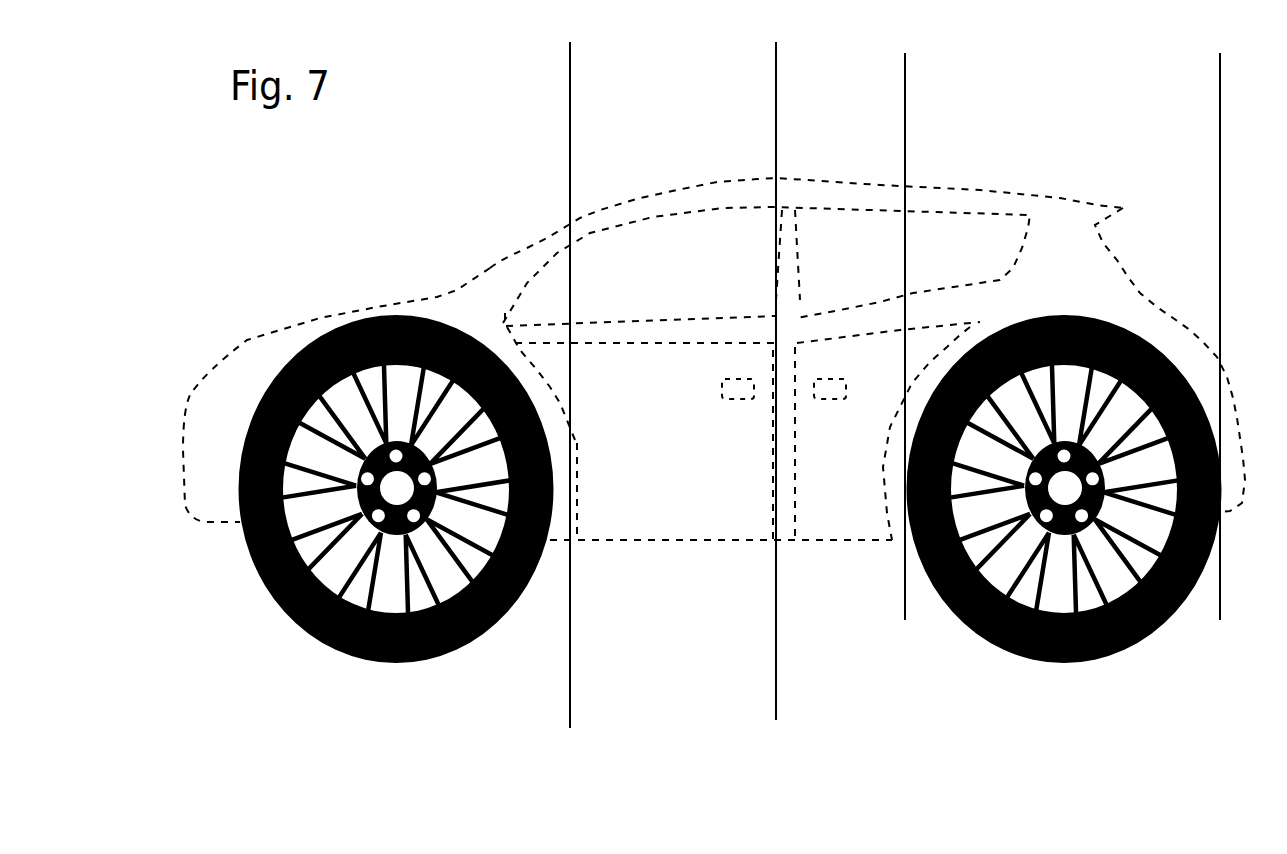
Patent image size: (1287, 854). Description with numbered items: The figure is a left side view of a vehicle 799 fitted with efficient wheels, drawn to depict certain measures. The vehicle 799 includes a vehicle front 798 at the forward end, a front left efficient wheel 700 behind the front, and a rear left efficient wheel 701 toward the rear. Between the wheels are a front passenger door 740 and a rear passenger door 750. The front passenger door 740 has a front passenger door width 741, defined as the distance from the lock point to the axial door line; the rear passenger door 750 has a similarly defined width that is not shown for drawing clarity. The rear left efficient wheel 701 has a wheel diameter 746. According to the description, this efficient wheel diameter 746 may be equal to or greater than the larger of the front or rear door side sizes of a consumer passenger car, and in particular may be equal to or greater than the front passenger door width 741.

The front left efficient wheel 700 is at (300, 618).
The rear left efficient wheel 701 is at (935, 565).
The front passenger door 740 is at (712, 453).
The front passenger door width 741 is at (776, 80).
The wheel diameter 746 is at (1220, 90).
The rear passenger door 750 is at (852, 455).
The vehicle front 798 is at (238, 348).
The vehicle 799 is at (475, 233).